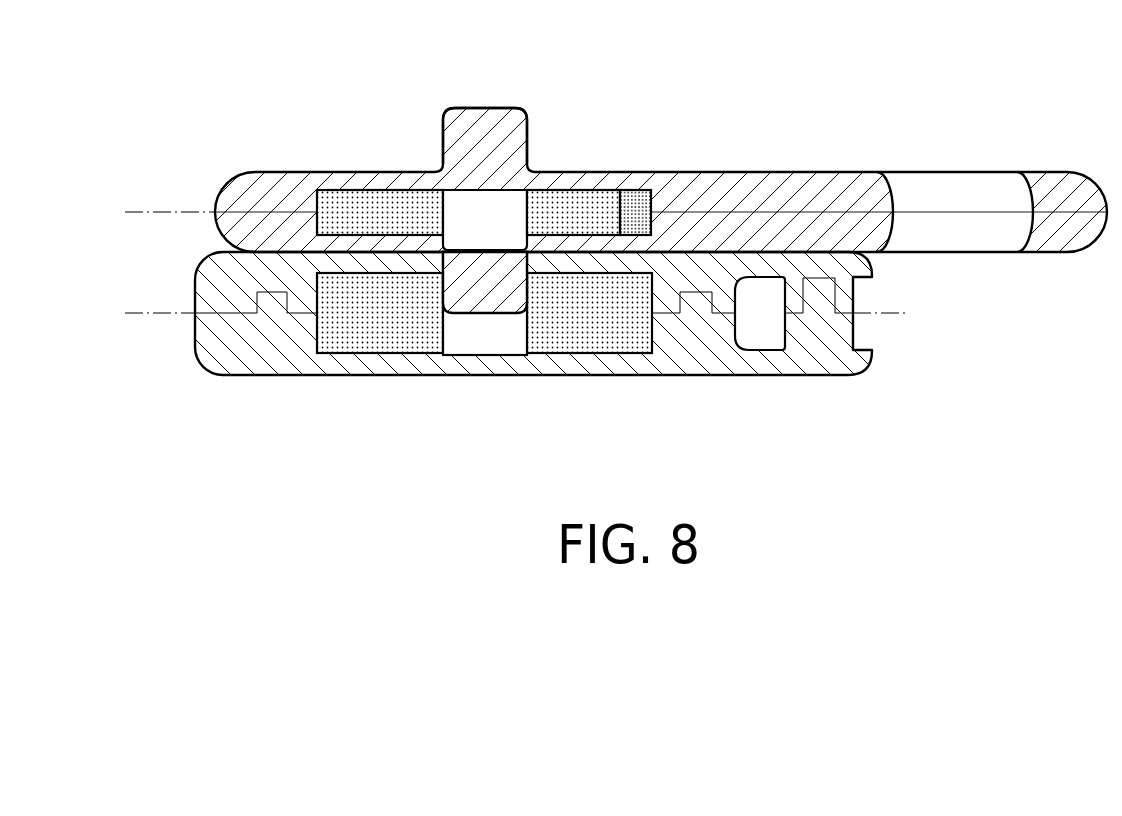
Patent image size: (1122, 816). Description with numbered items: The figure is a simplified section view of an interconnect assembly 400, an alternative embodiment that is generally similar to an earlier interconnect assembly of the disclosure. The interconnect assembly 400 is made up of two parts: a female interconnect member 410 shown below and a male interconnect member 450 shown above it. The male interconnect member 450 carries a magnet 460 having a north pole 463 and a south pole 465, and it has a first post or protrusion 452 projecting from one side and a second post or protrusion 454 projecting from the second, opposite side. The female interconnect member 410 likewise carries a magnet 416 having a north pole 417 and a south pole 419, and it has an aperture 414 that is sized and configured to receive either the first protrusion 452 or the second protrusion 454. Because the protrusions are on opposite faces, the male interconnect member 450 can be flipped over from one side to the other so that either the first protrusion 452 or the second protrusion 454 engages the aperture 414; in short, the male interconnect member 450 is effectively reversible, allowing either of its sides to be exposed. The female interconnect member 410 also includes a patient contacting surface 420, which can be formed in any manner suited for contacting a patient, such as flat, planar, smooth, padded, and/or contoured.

The interconnect assembly 400 is at (196, 133).
The female interconnect member 410 is at (717, 373).
The aperture 414 is at (453, 356).
The magnet 416 is at (362, 330).
The north pole 417 is at (577, 273).
The south pole 419 is at (620, 353).
The patient contacting surface 420 is at (803, 373).
The male interconnect member 450 is at (778, 175).
The first protrusion 452 is at (486, 130).
The second protrusion 454 is at (487, 293).
The magnet 460 is at (357, 200).
The north pole 463 is at (558, 190).
The south pole 465 is at (618, 212).